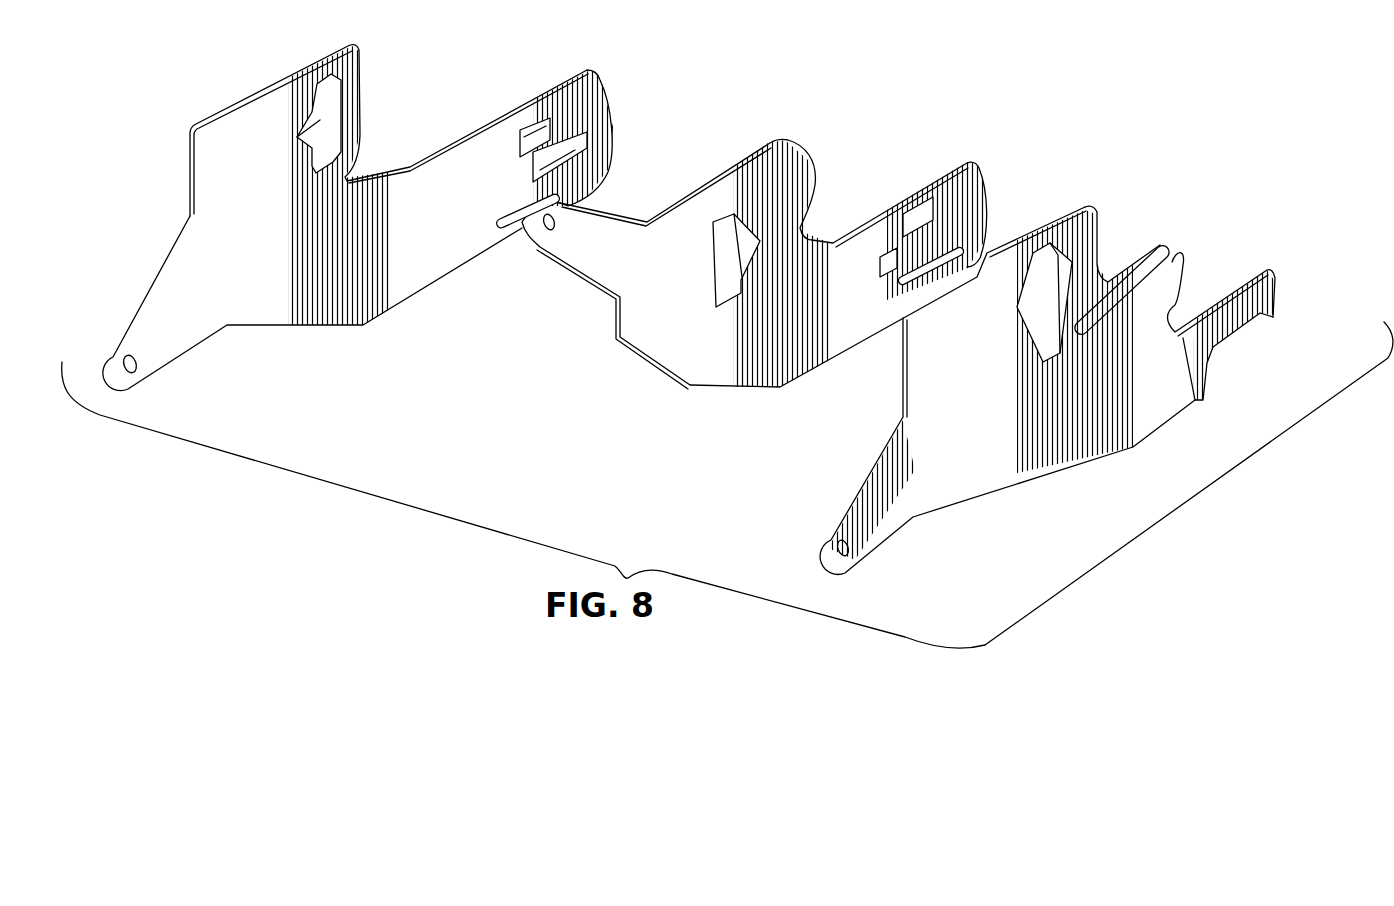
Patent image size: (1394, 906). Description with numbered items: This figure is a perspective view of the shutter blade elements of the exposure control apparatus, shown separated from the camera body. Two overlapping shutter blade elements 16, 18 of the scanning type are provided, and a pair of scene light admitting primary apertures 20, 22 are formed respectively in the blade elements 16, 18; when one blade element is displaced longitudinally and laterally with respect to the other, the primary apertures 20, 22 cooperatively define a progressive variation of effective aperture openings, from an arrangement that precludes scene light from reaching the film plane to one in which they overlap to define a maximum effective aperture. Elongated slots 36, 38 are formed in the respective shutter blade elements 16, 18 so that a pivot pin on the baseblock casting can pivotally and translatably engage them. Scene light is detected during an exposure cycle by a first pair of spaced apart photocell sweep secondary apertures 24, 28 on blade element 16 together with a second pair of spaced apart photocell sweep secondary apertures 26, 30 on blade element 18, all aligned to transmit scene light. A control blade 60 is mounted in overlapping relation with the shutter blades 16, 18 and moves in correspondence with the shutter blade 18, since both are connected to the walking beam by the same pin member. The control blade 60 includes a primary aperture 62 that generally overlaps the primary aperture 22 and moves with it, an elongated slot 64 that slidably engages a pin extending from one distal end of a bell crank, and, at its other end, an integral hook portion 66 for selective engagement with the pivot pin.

The shutter blade element 16 is at (597, 230).
The shutter blade element 18 is at (203, 343).
The primary aperture 20 is at (733, 213).
The primary aperture 22 is at (299, 135).
The photocell sweep secondary aperture 24 is at (547, 117).
The photocell sweep secondary aperture 26 is at (920, 210).
The photocell sweep secondary aperture 28 is at (893, 280).
The photocell sweep secondary aperture 30 is at (585, 143).
The elongated slot 36 is at (520, 232).
The elongated slot 38 is at (953, 232).
The control blade 60 is at (1170, 307).
The primary aperture 62 is at (1046, 347).
The elongated slot 64 is at (1138, 275).
The hook portion 66 is at (1247, 333).